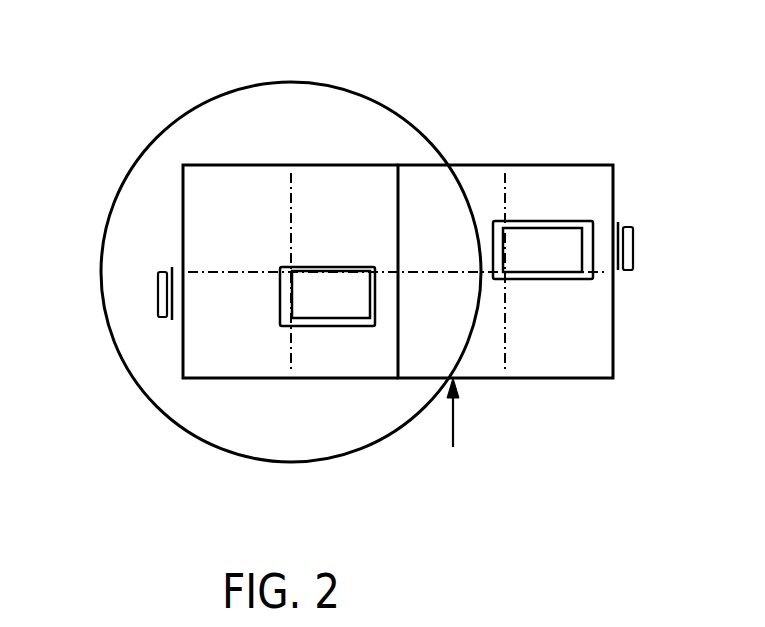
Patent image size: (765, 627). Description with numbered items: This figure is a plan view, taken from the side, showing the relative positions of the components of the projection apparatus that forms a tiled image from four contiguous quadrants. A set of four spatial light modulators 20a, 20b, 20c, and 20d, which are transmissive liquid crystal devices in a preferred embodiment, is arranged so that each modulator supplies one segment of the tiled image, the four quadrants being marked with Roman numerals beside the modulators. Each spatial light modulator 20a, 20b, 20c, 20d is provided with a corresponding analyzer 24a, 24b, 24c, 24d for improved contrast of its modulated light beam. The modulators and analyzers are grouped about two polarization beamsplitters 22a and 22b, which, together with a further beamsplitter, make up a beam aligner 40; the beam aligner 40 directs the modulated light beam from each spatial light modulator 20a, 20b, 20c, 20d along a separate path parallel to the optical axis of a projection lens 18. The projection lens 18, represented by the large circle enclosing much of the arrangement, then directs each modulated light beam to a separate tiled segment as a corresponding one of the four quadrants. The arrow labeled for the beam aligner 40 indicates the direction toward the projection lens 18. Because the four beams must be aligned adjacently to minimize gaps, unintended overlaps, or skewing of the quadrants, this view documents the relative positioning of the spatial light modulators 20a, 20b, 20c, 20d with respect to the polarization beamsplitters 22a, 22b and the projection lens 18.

The projection lens 18 is at (133, 166).
The polarization beamsplitter 22a is at (315, 165).
The polarization beamsplitter 22b is at (524, 165).
The analyzer 24a is at (282, 300).
The analyzer 24b is at (170, 268).
The analyzer 24c is at (582, 279).
The analyzer 24d is at (620, 222).
The spatial light modulator 20a is at (348, 320).
The spatial light modulator 20b is at (157, 298).
The spatial light modulator 20c is at (520, 277).
The spatial light modulator 20d is at (634, 246).
The beam aligner 40 is at (463, 429).